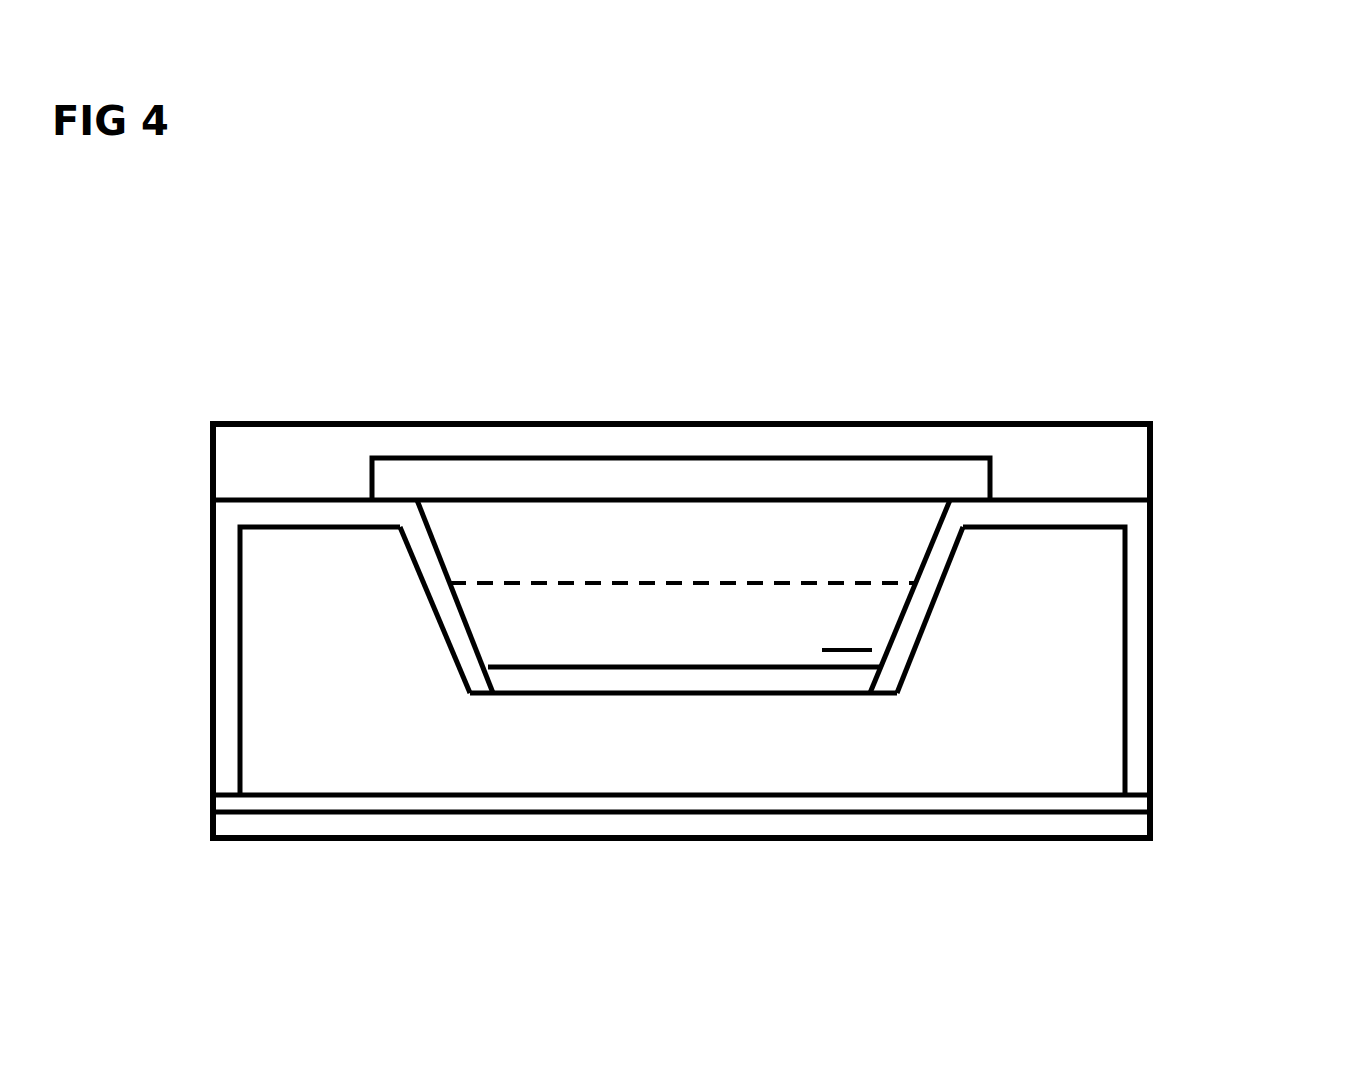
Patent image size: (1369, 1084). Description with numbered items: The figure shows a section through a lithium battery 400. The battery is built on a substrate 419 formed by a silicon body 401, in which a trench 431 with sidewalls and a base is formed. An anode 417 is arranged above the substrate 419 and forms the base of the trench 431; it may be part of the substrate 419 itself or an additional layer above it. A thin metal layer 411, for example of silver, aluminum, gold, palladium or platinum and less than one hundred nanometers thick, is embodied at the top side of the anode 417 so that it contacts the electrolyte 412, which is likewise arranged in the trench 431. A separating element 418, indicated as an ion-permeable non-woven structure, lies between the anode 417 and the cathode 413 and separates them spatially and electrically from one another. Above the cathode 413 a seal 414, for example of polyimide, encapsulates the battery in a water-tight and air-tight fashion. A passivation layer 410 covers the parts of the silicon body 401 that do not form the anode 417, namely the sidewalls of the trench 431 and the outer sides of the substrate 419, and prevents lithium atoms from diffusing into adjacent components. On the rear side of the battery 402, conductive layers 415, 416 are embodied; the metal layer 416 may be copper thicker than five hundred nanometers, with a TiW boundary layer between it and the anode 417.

The lithium battery 400 is at (1264, 176).
The battery 402 is at (1099, 330).
The passivation layer 410 is at (1137, 552).
The cathode 413 is at (829, 473).
The seal 414 is at (736, 438).
The separating element 418 is at (541, 583).
The substrate 419 is at (965, 608).
The silicon body 401 is at (1093, 682).
The anode 417 is at (263, 665).
The thin metal layer 411 is at (685, 675).
The trench 431 is at (792, 690).
The electrolyte 412 is at (847, 634).
The conductive layer 415 is at (1137, 797).
The metal layer 416 is at (1137, 820).